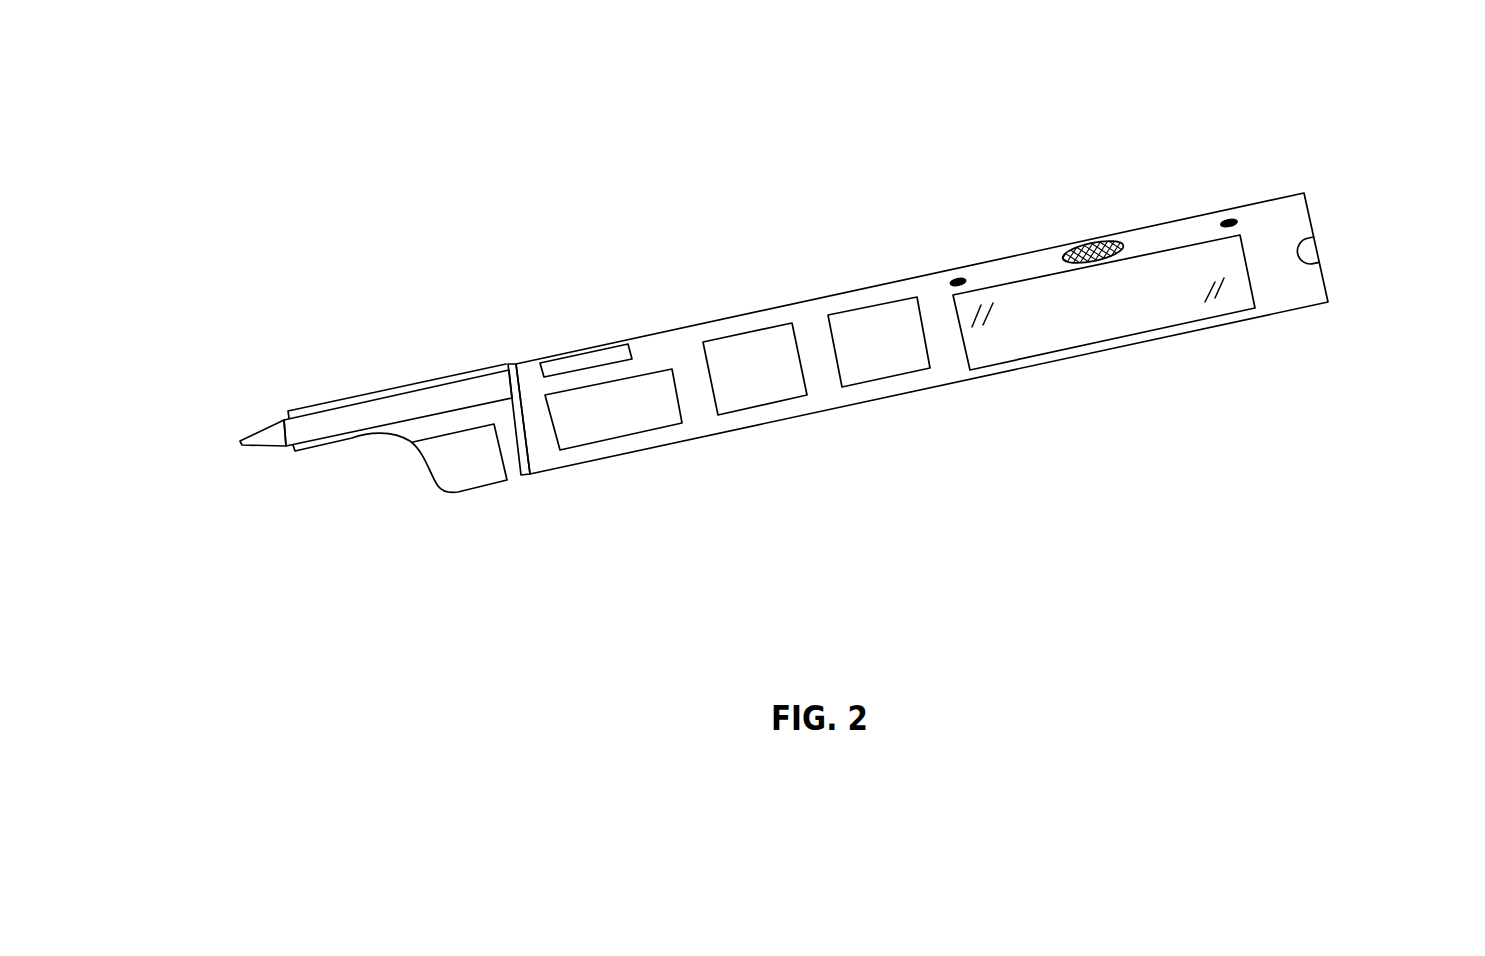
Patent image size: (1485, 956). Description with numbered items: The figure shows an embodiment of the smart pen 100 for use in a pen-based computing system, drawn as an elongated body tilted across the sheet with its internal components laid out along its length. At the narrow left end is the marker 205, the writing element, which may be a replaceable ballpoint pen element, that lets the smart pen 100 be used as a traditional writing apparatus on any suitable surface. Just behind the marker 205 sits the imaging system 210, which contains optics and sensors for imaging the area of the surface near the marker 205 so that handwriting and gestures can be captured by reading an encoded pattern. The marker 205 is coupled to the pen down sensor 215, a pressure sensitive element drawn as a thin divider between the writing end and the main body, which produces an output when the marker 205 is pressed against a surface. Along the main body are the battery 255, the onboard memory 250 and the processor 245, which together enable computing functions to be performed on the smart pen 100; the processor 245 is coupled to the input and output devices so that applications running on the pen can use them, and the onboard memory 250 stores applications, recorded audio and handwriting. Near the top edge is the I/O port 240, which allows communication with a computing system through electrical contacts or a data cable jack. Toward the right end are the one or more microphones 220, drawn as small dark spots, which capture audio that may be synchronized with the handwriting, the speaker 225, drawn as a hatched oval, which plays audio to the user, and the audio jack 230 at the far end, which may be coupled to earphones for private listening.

The smart pen 100 is at (703, 102).
The marker 205 is at (241, 443).
The imaging system 210 is at (485, 471).
The pen down sensor 215 is at (531, 475).
The microphones 220 is at (968, 277).
The speaker 225 is at (1096, 243).
The audio jack 230 is at (1313, 249).
The I/O port 240 is at (600, 343).
The processor 245 is at (900, 356).
The onboard memory 250 is at (777, 385).
The battery 255 is at (630, 420).